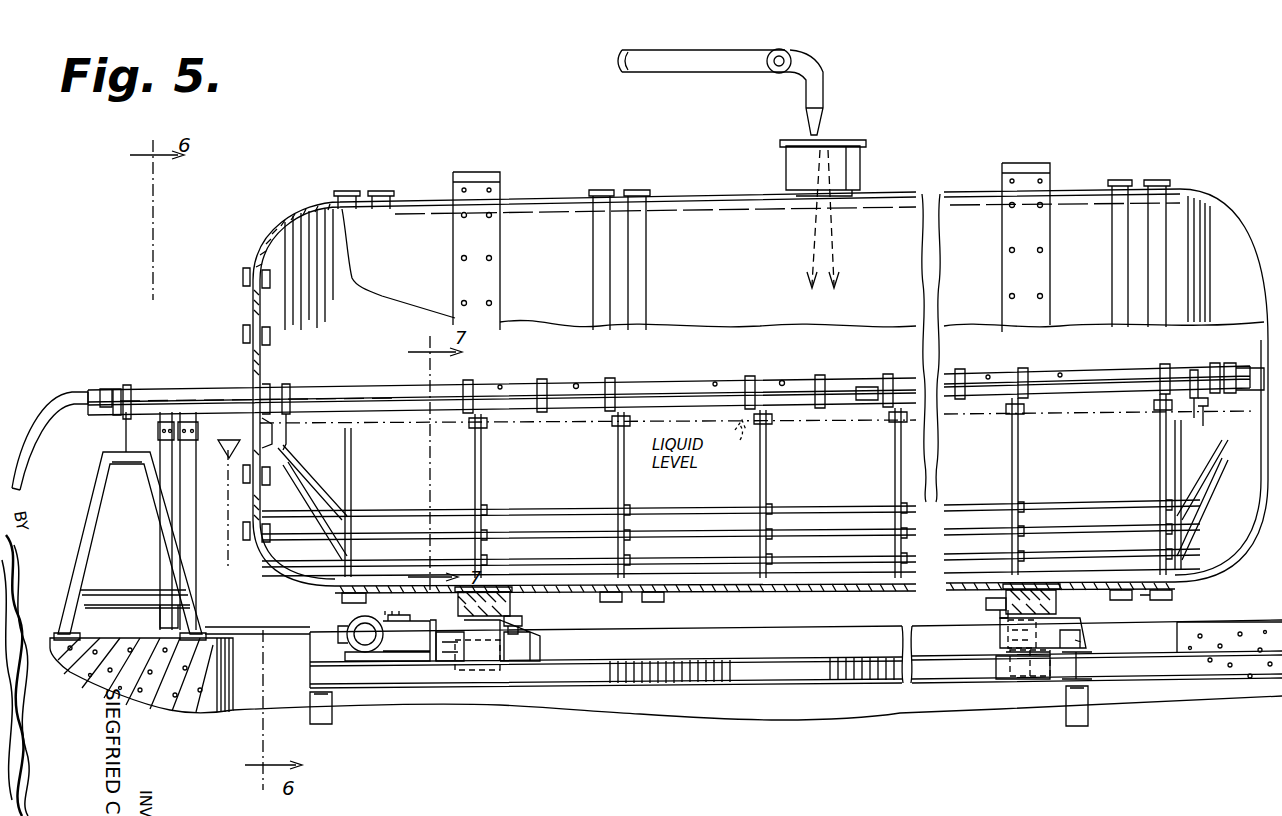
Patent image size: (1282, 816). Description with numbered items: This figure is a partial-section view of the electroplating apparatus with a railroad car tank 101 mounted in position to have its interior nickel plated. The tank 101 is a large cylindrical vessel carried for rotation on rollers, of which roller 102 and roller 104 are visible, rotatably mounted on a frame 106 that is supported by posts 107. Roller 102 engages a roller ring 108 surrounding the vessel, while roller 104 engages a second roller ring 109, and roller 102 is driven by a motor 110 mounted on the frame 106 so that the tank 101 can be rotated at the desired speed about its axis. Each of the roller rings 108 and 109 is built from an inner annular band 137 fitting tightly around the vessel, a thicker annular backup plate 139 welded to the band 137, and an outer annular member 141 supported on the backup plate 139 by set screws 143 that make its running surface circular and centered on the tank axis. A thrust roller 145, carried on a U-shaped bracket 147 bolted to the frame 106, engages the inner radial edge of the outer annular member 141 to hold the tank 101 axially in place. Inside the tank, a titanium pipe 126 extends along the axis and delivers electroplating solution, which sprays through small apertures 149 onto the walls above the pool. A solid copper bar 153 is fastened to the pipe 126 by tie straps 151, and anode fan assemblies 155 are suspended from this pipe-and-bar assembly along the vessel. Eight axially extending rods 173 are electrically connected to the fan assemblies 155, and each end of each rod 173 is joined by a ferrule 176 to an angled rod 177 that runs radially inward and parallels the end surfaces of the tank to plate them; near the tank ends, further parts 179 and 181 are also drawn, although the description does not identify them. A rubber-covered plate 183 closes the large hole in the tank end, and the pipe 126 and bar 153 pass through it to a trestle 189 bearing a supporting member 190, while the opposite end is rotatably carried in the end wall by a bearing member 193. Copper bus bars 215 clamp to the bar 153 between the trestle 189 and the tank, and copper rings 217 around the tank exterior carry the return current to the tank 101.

The tank 101 is at (692, 204).
The roller 102 is at (476, 690).
The roller 104 is at (1028, 660).
The frame 106 is at (762, 672).
The post 107 is at (325, 725).
The roller ring 108 is at (494, 280).
The roller ring 109 is at (1008, 311).
The motor 110 is at (348, 624).
The pipe 126 is at (675, 380).
The band 137 is at (482, 594).
The backup plate 139 is at (476, 602).
The outer annular member 141 is at (460, 632).
The set screw 143 is at (490, 256).
The thrust roller 145 is at (522, 616).
The U-shaped bracket 147 is at (532, 630).
The aperture 149 is at (578, 381).
The tie strap 151 is at (538, 379).
The copper bar 153 is at (862, 406).
The anode fan assembly 155 is at (612, 480).
The rod 173 is at (706, 510).
The ferrule 176 is at (346, 510).
The rod 177 is at (318, 530).
The hanger bracket 179 is at (278, 388).
The hanger strap 181 is at (300, 420).
The plate 183 is at (252, 312).
The trestle 189 is at (100, 480).
The supporting member 190 is at (126, 435).
The bearing member 193 is at (1238, 368).
The copper bus bar 215 is at (212, 420).
The copper ring 217 is at (383, 192).